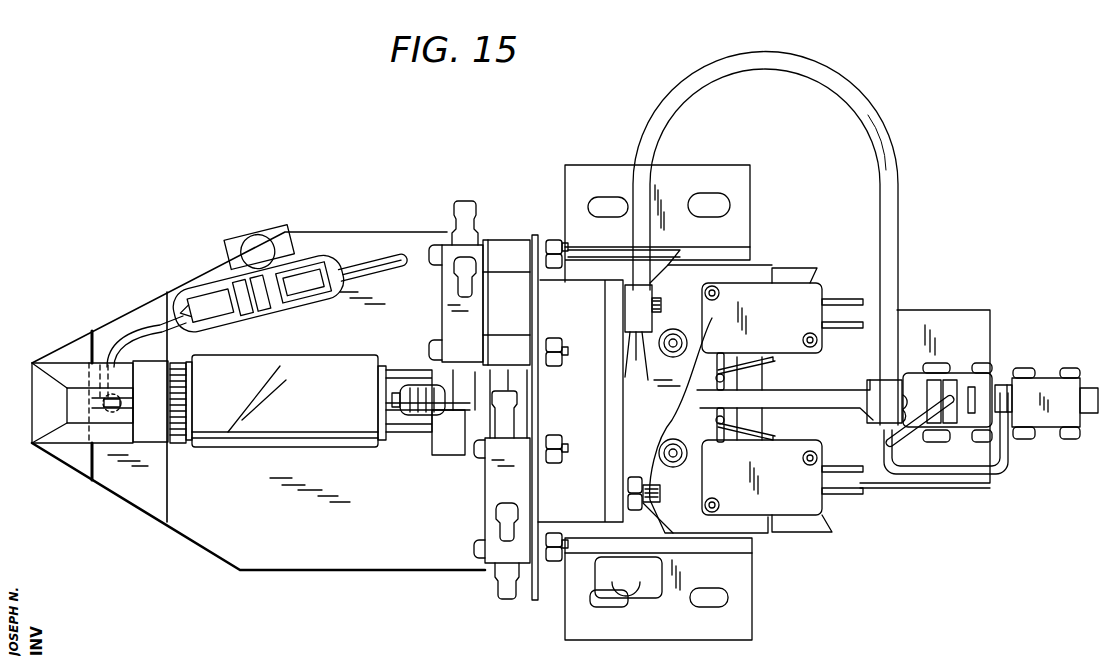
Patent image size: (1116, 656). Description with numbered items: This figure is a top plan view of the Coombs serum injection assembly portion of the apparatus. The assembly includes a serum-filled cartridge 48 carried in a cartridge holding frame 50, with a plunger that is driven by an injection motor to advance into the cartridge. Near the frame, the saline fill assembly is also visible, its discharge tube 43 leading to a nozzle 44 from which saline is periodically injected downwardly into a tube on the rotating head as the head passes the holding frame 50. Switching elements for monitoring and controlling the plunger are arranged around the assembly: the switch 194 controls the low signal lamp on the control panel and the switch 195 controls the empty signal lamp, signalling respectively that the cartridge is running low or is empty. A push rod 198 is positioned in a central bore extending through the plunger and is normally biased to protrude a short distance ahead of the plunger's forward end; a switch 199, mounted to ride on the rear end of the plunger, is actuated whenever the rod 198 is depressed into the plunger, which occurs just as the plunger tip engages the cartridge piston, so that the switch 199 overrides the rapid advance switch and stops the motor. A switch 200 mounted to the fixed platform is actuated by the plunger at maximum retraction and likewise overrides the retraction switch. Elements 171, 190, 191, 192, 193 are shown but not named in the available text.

The discharge tube 43 is at (370, 262).
The nozzle 44 is at (122, 336).
The serum-filled cartridge 48 is at (240, 440).
The cartridge holding frame 50 is at (397, 552).
The actuating rod 171 is at (403, 426).
The push rod 198 is at (409, 382).
The upper switch lever 190 is at (801, 392).
The lower switch lever 191 is at (772, 413).
The actuating arm 192 is at (821, 381).
The pivot lever 193 is at (850, 420).
The switch 194 is at (812, 298).
The switch 195 is at (812, 500).
The switch 199 is at (985, 388).
The switch 200 is at (1050, 412).